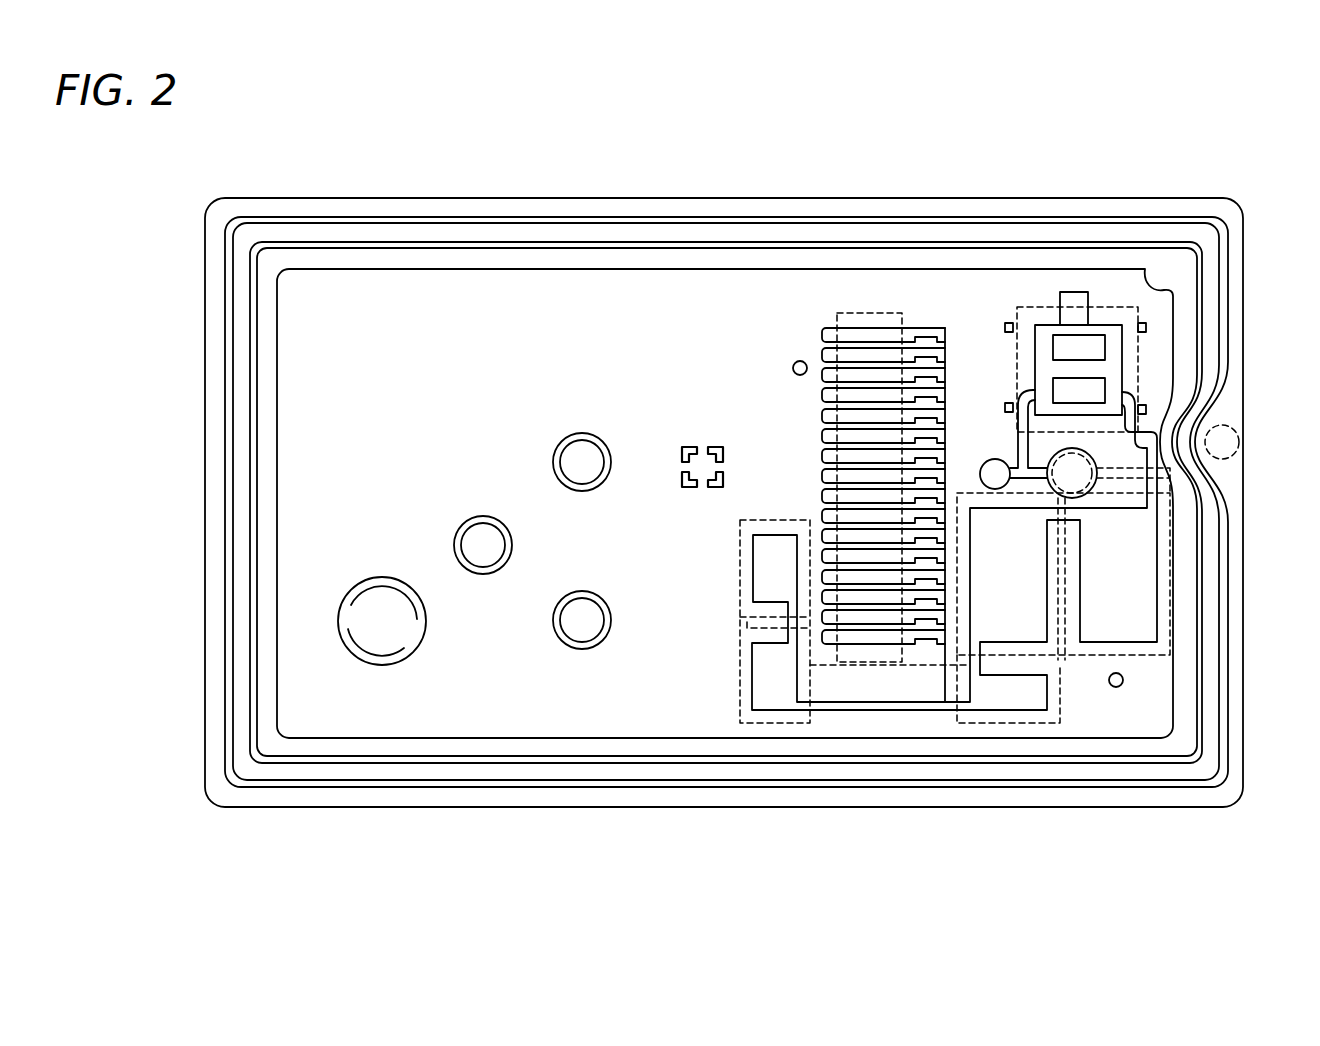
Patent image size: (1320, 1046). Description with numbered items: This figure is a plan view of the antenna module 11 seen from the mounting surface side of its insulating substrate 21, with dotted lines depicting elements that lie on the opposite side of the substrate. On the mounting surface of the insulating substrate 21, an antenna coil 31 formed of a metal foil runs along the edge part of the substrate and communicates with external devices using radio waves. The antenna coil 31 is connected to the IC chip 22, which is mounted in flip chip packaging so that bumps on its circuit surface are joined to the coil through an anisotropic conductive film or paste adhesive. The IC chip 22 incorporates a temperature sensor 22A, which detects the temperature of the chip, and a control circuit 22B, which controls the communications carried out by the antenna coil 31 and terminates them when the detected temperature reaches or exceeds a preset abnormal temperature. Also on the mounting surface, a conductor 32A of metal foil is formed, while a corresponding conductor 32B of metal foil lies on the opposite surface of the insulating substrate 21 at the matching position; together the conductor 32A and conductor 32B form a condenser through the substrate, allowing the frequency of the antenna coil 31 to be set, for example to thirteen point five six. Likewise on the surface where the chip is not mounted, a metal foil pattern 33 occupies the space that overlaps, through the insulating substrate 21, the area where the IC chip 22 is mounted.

The antenna module 11 is at (800, 862).
The insulating substrate 21 is at (692, 200).
The antenna coil 31 is at (530, 217).
The conductor 32A is at (883, 421).
The conductor 32B is at (850, 313).
The pattern 33 is at (1047, 307).
The IC chip 22 is at (1175, 277).
The temperature sensor 22A is at (1105, 348).
The control circuit 22B is at (1105, 391).